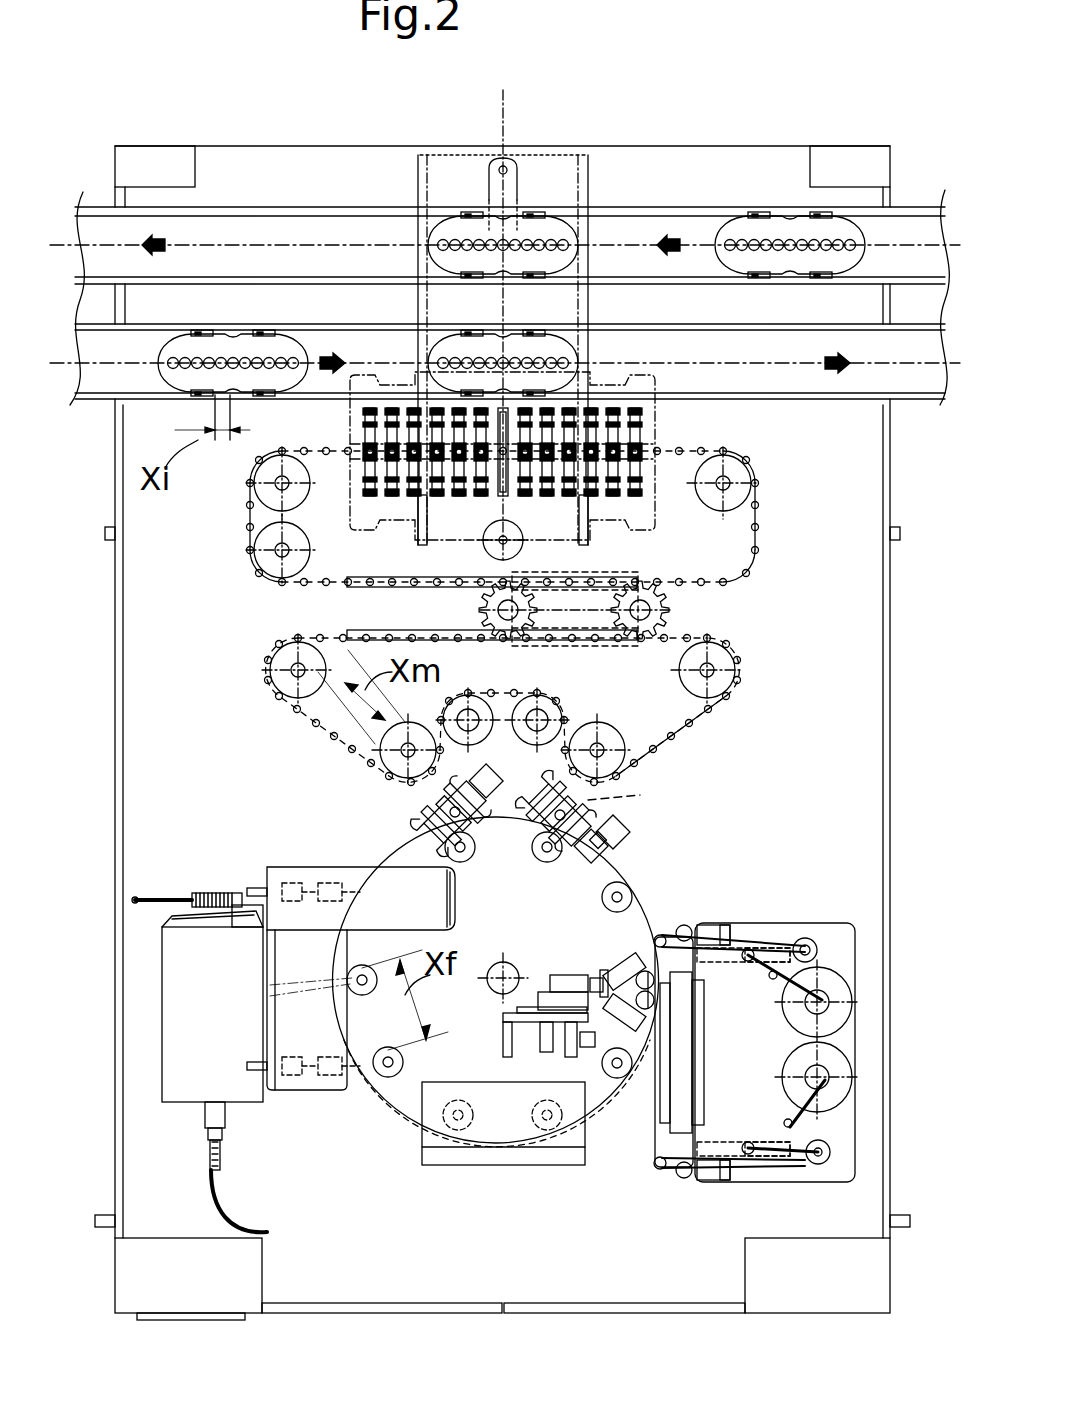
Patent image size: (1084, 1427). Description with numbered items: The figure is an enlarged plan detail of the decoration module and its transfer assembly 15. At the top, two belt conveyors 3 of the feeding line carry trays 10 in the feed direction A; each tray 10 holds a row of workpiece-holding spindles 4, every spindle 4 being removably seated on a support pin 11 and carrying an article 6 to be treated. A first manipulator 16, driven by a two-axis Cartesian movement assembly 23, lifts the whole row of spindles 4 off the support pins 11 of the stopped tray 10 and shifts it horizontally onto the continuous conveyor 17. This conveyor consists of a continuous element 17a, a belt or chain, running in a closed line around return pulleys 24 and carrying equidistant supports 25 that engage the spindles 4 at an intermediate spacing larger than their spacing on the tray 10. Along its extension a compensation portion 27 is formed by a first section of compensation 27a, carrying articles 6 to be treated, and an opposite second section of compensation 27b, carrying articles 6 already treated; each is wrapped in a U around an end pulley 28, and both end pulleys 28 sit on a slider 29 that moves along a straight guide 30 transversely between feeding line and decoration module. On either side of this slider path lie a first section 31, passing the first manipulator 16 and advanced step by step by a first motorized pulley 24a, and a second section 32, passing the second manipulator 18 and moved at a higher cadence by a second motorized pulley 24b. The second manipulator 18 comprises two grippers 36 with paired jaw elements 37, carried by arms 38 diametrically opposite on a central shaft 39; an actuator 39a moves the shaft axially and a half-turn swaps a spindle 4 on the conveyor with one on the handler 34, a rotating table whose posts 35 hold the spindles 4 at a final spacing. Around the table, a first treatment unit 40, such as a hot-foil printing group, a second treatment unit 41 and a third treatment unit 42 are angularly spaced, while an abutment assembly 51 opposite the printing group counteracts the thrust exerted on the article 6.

The belt conveyor 3 is at (245, 215).
The workpiece-holding spindle 4 is at (200, 362).
The article 6 is at (283, 360).
The tray 10 is at (237, 350).
The support pin 11 is at (545, 355).
The transfer assembly 15 is at (795, 604).
The first manipulator 16 is at (678, 418).
The continuous conveyor 17 is at (766, 526).
The continuous element 17a is at (315, 720).
The second manipulator 18 is at (645, 795).
The movement assembly 23 is at (605, 352).
The return pulley 24 is at (270, 490).
The first motorized pulley 24a is at (742, 468).
The second motorized pulley 24b is at (395, 760).
The support 25 is at (248, 530).
The compensation portion 27 is at (248, 650).
The first section of compensation 27a is at (312, 584).
The second section of compensation 27b is at (690, 580).
The end pulley 28 is at (495, 601).
The slider 29 is at (572, 634).
The straight guide 30 is at (382, 586).
The first section 31 is at (760, 502).
The second section 32 is at (672, 742).
The handler 34 is at (597, 1110).
The post 35 is at (633, 897).
The gripper 36 is at (565, 790).
The jaw element 37 is at (585, 852).
The arm 38 is at (606, 812).
The central shaft 39 is at (642, 797).
The actuator 39a is at (606, 844).
The first treatment unit 40 is at (815, 906).
The second treatment unit 41 is at (460, 1172).
The third treatment unit 42 is at (268, 1106).
The abutment assembly 51 is at (638, 1025).
The feed direction A is at (837, 366).